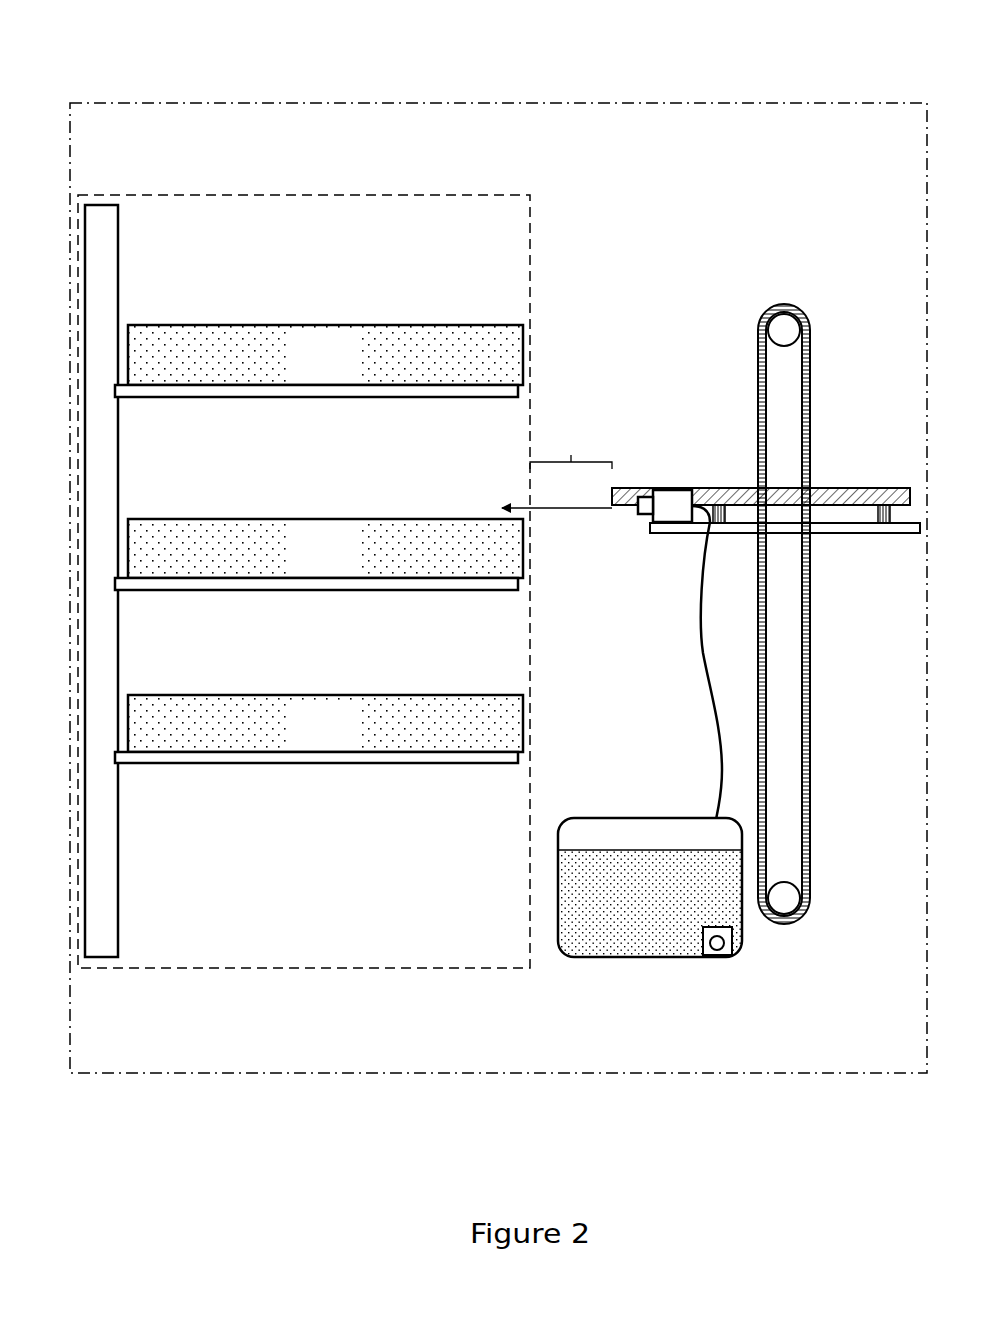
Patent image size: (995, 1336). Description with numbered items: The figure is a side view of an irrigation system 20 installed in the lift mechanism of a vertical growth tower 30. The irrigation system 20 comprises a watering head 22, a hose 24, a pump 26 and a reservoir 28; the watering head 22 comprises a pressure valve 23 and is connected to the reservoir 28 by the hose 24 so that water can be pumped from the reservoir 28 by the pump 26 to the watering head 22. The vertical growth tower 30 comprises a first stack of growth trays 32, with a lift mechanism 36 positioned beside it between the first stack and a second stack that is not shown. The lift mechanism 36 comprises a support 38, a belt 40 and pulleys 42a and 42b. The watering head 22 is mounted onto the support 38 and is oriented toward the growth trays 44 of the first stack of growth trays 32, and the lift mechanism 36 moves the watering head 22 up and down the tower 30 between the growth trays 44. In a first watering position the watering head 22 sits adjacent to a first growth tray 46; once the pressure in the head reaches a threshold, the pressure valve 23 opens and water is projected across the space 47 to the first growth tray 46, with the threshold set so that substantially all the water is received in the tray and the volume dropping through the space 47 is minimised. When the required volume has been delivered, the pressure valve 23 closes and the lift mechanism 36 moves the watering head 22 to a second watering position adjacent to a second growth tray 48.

The irrigation system 20 is at (662, 318).
The watering head 22 is at (640, 497).
The pressure valve 23 is at (670, 492).
The hose 24 is at (713, 725).
The pump 26 is at (730, 950).
The reservoir 28 is at (558, 922).
The vertical growth tower 30 is at (691, 84).
The first stack of growth trays 32 is at (260, 968).
The lift mechanism 36 is at (813, 262).
The support 38 is at (825, 533).
The belt 40 is at (810, 783).
The pulley 42a is at (788, 330).
The pulley 42b is at (790, 898).
The growth trays 44 is at (319, 538).
The first growth tray 46 is at (517, 567).
The space 47 is at (571, 438).
The second growth tray 48 is at (517, 743).